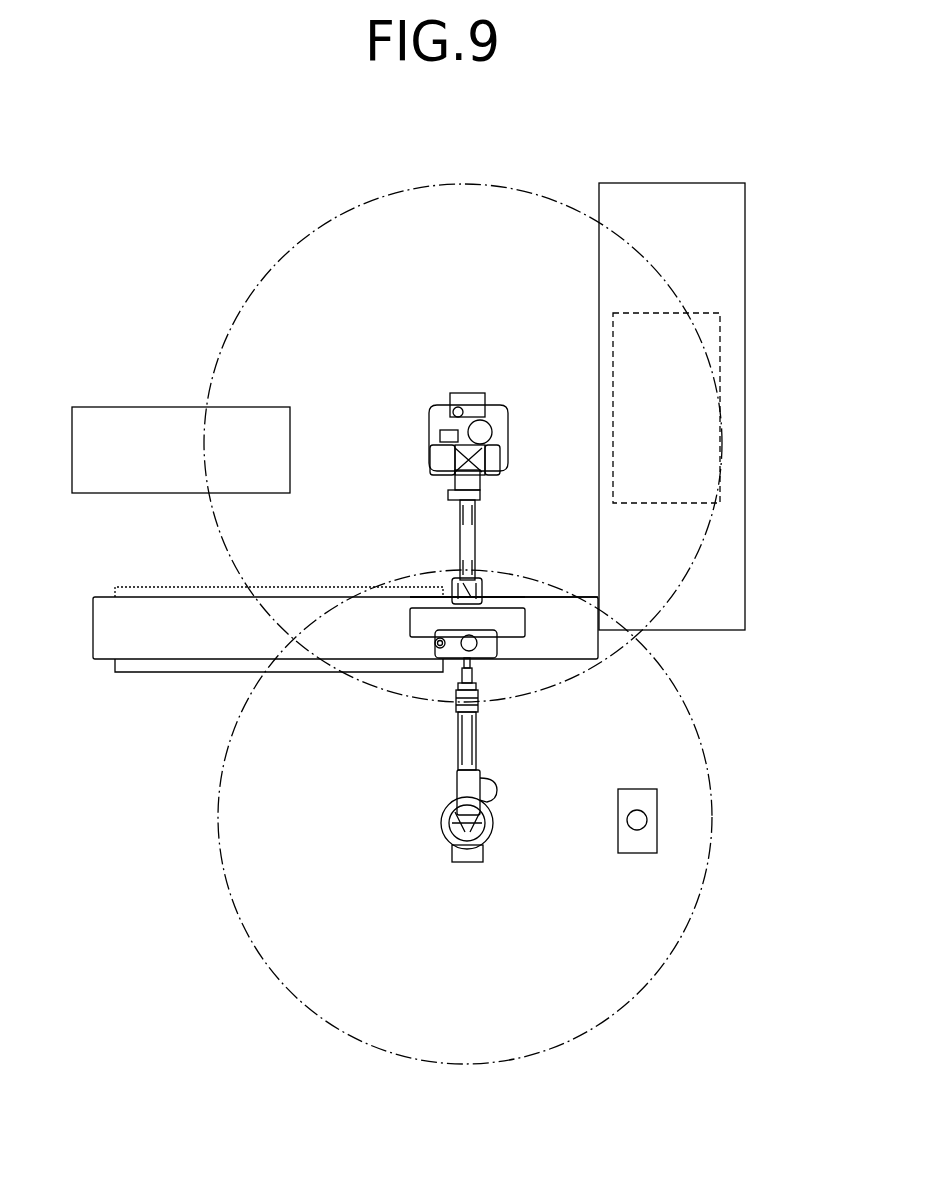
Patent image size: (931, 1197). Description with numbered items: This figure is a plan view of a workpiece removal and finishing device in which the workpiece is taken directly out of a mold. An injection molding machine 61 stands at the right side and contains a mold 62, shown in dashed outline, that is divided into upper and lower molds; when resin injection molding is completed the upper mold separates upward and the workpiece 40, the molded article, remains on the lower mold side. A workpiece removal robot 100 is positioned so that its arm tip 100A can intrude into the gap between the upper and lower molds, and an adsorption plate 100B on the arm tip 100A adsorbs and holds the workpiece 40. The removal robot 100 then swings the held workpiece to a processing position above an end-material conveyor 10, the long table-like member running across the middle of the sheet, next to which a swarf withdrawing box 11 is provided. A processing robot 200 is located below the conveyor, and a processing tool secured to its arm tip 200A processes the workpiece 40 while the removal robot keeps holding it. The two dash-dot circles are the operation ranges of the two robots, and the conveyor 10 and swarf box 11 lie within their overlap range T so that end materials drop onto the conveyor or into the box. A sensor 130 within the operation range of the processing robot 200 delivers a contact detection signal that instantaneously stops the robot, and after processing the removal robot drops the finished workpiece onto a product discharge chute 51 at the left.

The end-material conveyor 10 is at (145, 652).
The swarf withdrawing box 11 is at (551, 608).
The workpiece 40 is at (435, 645).
The product discharge chute 51 is at (137, 416).
The injection molding machine 61 is at (728, 248).
The mold 62 is at (702, 478).
The workpiece removal robot 100 is at (419, 380).
The arm tip 100A is at (462, 590).
The adsorption plate 100B is at (427, 607).
The sensor 130 is at (637, 840).
The processing robot 200 is at (429, 862).
The arm tip 200A is at (458, 697).
The overlap range T is at (523, 675).